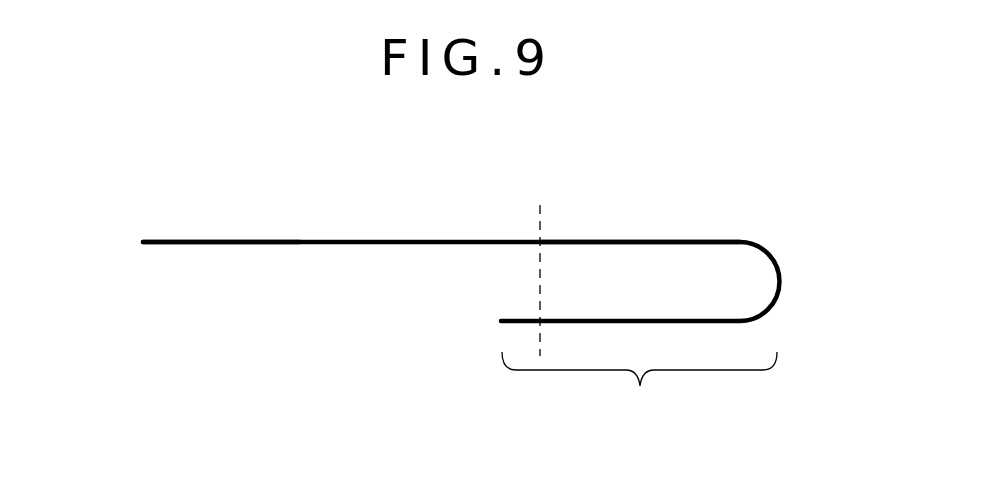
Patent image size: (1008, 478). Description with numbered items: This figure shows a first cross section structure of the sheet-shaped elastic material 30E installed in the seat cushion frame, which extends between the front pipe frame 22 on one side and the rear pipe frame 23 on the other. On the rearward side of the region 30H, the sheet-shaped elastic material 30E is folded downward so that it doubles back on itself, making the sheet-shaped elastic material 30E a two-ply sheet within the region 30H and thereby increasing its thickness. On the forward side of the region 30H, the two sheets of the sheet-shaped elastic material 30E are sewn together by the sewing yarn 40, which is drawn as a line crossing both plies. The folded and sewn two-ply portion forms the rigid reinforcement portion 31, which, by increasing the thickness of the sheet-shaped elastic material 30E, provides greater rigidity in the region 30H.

The front pipe frame 22 is at (396, 255).
The rear pipe frame 23 is at (805, 281).
The sheet-shaped elastic material 30E is at (186, 230).
The rigid reinforcement portion 31 is at (662, 222).
The sewing yarn 40 is at (534, 214).
The region 30H is at (639, 377).